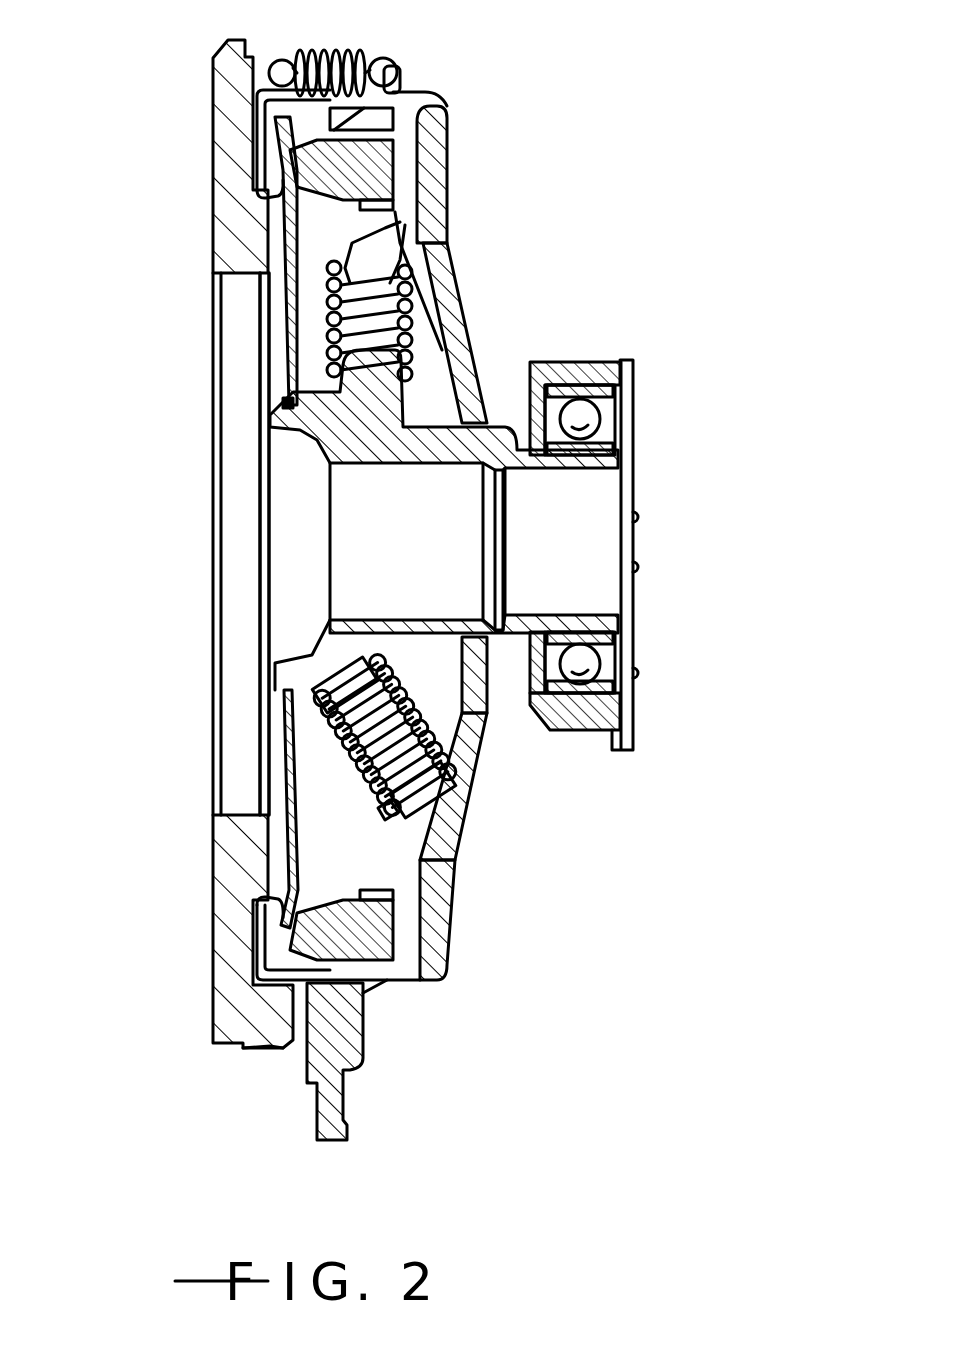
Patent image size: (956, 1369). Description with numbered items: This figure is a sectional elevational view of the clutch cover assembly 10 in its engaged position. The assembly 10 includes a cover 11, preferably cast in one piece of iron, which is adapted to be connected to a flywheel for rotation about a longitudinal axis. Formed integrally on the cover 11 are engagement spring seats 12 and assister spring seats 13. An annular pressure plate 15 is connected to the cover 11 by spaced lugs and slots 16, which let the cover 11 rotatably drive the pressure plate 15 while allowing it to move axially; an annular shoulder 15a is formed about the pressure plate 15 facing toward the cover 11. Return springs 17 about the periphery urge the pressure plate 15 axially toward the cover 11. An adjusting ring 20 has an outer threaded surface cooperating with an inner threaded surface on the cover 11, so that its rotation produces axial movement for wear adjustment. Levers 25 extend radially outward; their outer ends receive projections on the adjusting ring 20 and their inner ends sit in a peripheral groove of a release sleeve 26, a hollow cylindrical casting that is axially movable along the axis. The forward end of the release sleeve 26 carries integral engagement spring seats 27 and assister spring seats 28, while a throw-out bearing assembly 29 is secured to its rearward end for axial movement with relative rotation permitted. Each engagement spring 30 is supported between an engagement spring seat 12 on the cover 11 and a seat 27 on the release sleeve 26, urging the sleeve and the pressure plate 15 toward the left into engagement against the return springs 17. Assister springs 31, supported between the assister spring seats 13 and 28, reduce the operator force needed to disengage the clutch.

The clutch cover assembly 10 is at (496, 169).
The cover 11 is at (448, 115).
The engagement spring seats 12 is at (460, 802).
The assister spring seats 13 is at (400, 257).
The pressure plate 15 is at (240, 181).
The annular shoulder 15a is at (258, 888).
The lugs and slots 16 is at (260, 1068).
The return springs 17 is at (403, 43).
The adjusting ring 20 is at (398, 906).
The levers 25 is at (285, 268).
The release sleeve 26 is at (338, 432).
The engagement spring seats 27 is at (335, 692).
The assister spring seats 28 is at (420, 340).
The throw-out bearing assembly 29 is at (603, 362).
The engagement spring 30 is at (335, 775).
The assister springs 31 is at (405, 300).